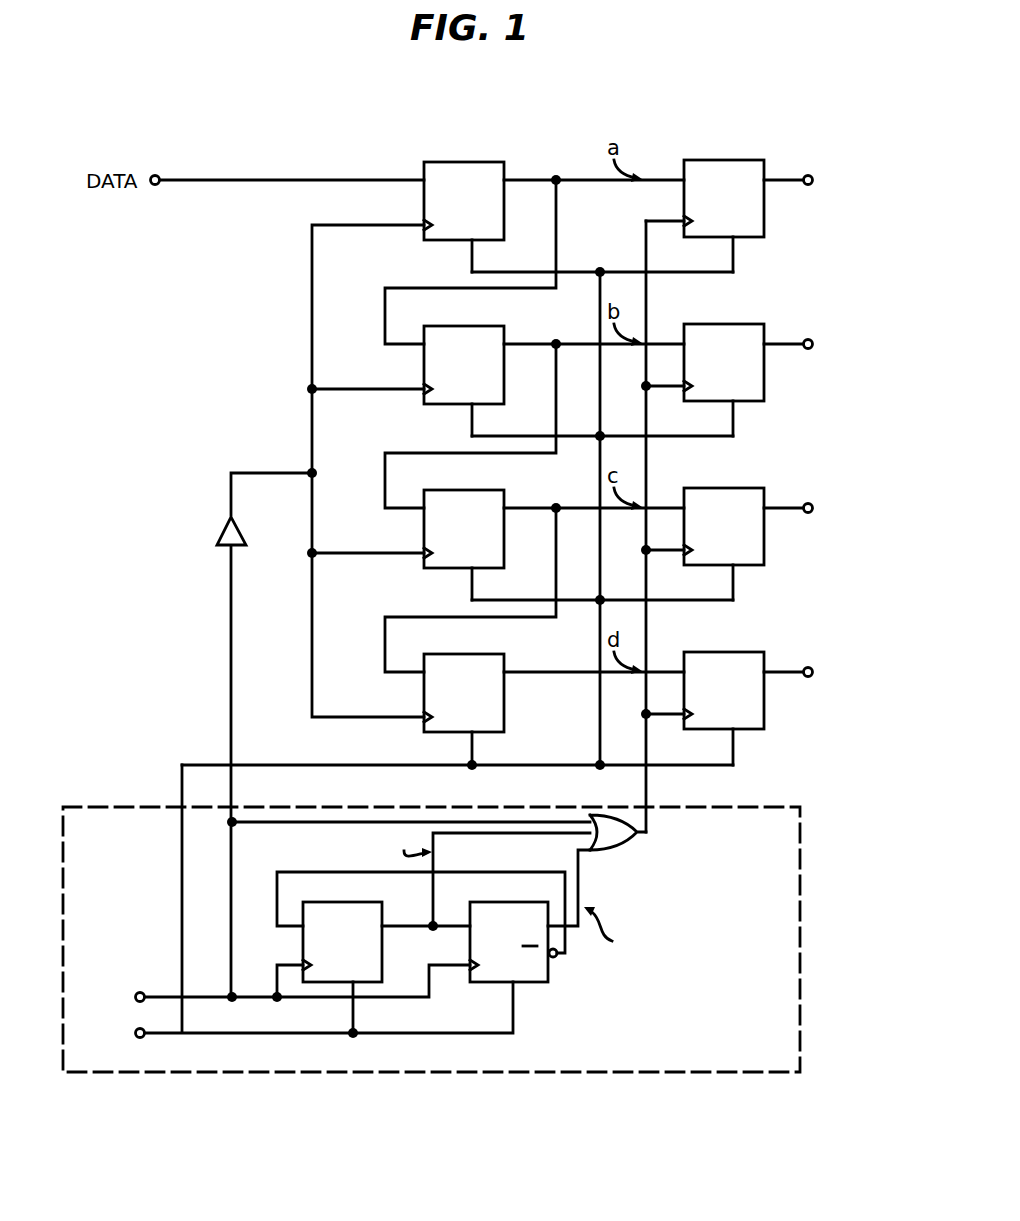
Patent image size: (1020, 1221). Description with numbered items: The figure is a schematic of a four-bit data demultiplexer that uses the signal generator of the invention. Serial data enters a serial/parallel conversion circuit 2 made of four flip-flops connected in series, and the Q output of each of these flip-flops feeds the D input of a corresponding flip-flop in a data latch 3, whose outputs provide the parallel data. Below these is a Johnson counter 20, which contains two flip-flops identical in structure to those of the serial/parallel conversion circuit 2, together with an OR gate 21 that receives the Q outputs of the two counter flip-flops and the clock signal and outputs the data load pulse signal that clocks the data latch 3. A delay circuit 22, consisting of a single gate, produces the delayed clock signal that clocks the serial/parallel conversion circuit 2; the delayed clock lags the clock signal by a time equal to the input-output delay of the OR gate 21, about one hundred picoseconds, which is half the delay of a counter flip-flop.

The serial/parallel conversion circuit 2 is at (485, 118).
The data latch 3 is at (740, 116).
The Johnson counter 20 is at (110, 806).
The OR gate 21 is at (637, 851).
The delay circuit 22 is at (216, 536).